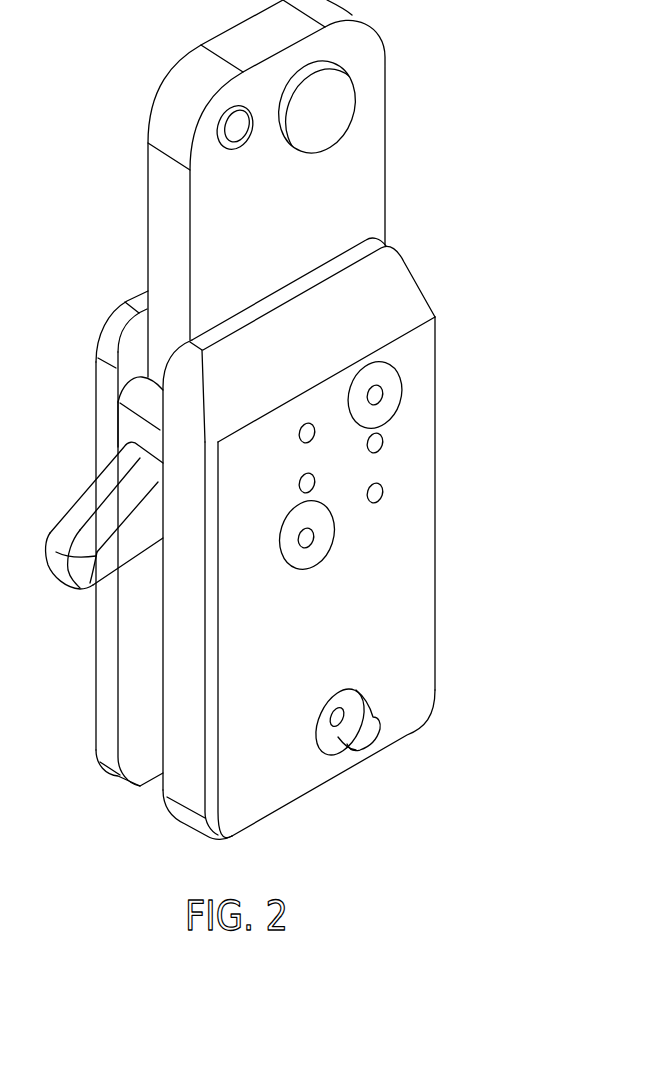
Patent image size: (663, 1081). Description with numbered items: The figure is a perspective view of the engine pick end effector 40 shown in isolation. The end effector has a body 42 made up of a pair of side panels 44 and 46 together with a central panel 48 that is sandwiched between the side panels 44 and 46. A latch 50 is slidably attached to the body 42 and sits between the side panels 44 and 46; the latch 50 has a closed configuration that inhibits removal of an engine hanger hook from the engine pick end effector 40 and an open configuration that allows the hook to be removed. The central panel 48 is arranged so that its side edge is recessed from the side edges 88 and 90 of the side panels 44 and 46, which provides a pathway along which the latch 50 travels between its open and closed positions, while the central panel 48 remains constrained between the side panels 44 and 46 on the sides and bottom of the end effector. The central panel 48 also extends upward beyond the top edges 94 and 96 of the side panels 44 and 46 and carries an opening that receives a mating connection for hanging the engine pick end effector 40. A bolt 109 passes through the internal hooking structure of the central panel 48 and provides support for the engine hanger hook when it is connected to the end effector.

The engine pick end effector 40 is at (512, 129).
The body 42 is at (431, 496).
The side panel 44 is at (95, 360).
The side panel 46 is at (428, 609).
The central panel 48 is at (380, 196).
The latch 50 is at (132, 688).
The side edge 88 is at (100, 432).
The side edge 90 is at (183, 595).
The top edge 94 is at (128, 317).
The top edge 96 is at (292, 285).
The bolt 109 is at (342, 732).